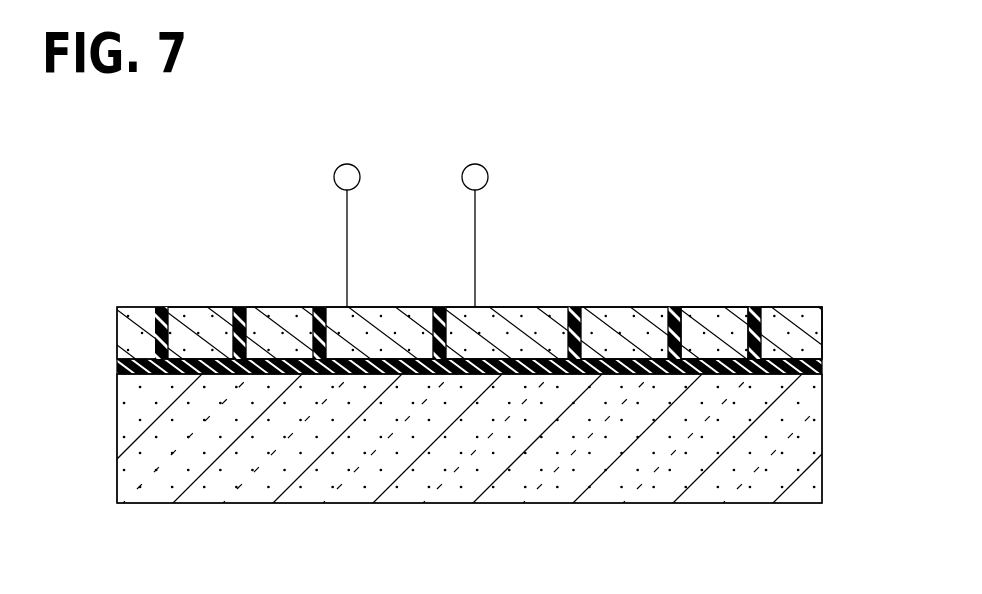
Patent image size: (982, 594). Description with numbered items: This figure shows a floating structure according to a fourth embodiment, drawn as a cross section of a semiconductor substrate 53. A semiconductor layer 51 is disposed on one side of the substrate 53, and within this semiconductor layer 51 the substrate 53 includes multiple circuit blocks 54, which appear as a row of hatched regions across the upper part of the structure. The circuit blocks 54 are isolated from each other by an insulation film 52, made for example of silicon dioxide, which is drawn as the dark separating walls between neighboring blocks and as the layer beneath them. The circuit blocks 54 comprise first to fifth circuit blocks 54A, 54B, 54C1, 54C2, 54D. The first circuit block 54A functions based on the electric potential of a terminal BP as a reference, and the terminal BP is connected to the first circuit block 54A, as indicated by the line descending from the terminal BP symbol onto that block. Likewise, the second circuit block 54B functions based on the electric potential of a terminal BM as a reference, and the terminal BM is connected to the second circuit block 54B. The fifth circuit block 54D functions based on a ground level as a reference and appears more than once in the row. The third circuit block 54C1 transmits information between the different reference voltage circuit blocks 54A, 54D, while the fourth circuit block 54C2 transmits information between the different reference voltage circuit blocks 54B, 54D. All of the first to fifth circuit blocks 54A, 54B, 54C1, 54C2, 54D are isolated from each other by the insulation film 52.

The semiconductor layer 51 is at (117, 338).
The insulation film 52 is at (821, 344).
The semiconductor substrate 53 is at (353, 477).
The circuit blocks 54 is at (735, 319).
The first circuit block 54A is at (400, 313).
The second circuit block 54B is at (532, 313).
The third circuit block 54C1 is at (628, 313).
The fourth circuit block 54C2 is at (287, 313).
The fifth circuit block 54D is at (207, 313).
The terminal BP is at (348, 216).
The terminal BM is at (476, 216).